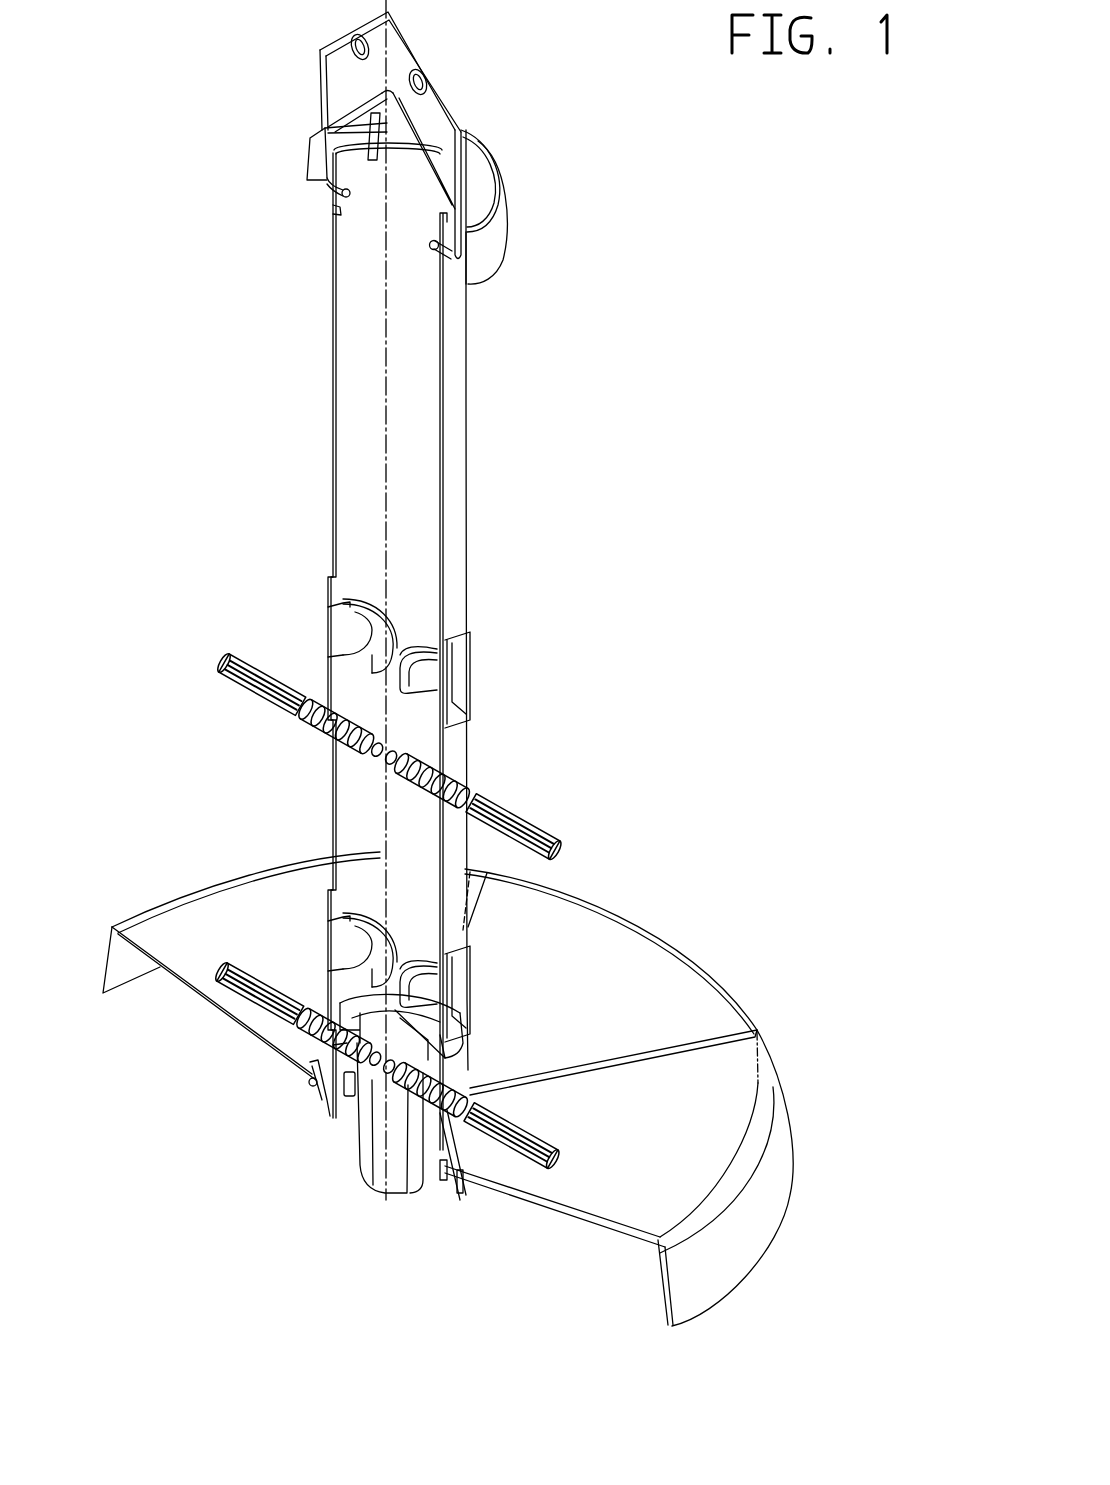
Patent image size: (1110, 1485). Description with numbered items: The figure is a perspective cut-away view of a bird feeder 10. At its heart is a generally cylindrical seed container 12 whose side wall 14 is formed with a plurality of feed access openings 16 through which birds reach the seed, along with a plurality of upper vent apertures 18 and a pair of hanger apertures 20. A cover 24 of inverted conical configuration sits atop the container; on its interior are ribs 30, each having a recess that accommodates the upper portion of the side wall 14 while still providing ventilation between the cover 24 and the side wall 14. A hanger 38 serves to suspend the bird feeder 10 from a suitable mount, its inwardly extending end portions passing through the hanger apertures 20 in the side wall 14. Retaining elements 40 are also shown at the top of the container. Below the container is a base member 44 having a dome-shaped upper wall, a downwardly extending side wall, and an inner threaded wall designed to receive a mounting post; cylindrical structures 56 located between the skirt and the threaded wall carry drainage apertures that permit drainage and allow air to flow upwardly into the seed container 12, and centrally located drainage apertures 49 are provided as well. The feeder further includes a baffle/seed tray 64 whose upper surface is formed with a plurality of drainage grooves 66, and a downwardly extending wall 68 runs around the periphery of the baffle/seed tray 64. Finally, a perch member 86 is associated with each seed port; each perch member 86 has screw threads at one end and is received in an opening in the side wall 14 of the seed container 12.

The bird feeder 10 is at (180, 183).
The seed container 12 is at (492, 483).
The side wall 14 is at (338, 366).
The feed access openings 16 is at (325, 630).
The upper vent apertures 18 is at (325, 212).
The hanger apertures 20 is at (340, 218).
The cover 24 is at (530, 190).
The ribs 30 is at (355, 130).
The hanger 38 is at (415, 65).
The retaining hooks 40 is at (330, 190).
The base member 44 is at (325, 1160).
The centrally located drainage apertures 49 is at (430, 1025).
The cylindrical structures 56 is at (440, 1180).
The baffle/seed tray 64 is at (610, 932).
The drainage grooves 66 is at (710, 1035).
The downwardly extending wall 68 is at (763, 1193).
The perch member 86 is at (222, 668).